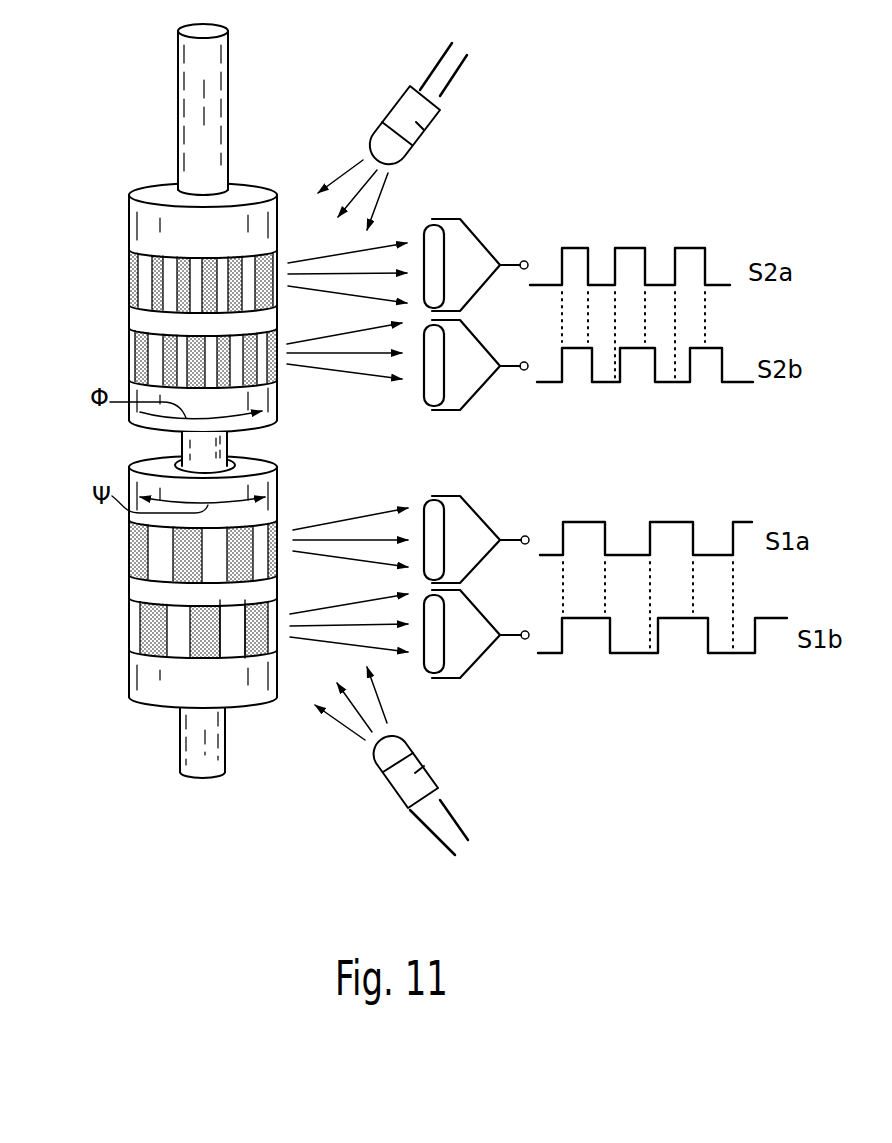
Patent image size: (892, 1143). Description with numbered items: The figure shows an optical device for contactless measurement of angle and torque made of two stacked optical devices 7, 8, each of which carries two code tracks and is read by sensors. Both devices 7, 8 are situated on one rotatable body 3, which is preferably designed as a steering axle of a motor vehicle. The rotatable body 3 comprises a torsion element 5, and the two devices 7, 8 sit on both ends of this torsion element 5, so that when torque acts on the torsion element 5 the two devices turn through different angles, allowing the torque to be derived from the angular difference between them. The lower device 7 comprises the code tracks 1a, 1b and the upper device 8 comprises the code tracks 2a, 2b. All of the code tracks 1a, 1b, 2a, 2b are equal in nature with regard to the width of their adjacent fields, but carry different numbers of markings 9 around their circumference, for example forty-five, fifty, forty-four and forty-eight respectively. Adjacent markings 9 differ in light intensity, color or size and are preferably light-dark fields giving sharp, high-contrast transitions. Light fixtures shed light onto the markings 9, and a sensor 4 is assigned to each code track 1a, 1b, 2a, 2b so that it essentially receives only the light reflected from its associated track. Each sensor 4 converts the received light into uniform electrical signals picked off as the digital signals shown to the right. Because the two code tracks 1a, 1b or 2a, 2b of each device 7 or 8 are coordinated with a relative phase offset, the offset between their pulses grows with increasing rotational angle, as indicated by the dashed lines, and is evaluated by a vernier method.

The code track 1a is at (137, 545).
The code track 1b is at (140, 628).
The code track 2a is at (129, 278).
The code track 2b is at (136, 355).
The rotatable body 3 is at (220, 78).
The sensor 4 is at (477, 628).
The torsion element 5 is at (198, 454).
The device 7 is at (145, 685).
The device 8 is at (143, 229).
The markings 9 is at (257, 650).